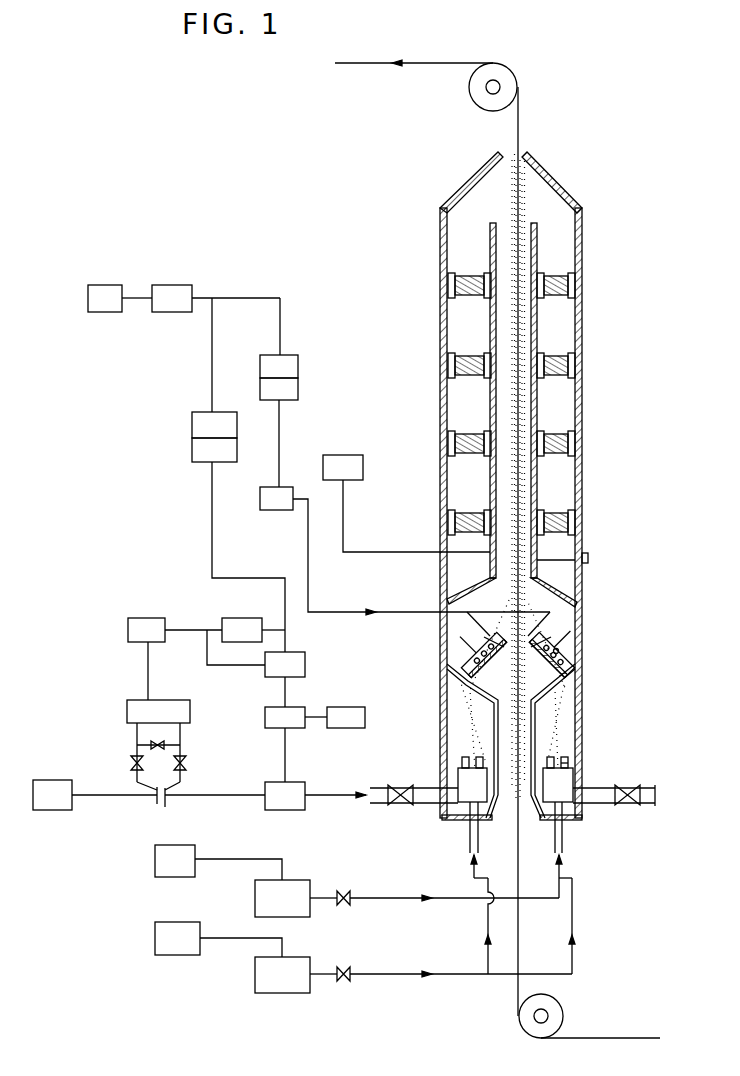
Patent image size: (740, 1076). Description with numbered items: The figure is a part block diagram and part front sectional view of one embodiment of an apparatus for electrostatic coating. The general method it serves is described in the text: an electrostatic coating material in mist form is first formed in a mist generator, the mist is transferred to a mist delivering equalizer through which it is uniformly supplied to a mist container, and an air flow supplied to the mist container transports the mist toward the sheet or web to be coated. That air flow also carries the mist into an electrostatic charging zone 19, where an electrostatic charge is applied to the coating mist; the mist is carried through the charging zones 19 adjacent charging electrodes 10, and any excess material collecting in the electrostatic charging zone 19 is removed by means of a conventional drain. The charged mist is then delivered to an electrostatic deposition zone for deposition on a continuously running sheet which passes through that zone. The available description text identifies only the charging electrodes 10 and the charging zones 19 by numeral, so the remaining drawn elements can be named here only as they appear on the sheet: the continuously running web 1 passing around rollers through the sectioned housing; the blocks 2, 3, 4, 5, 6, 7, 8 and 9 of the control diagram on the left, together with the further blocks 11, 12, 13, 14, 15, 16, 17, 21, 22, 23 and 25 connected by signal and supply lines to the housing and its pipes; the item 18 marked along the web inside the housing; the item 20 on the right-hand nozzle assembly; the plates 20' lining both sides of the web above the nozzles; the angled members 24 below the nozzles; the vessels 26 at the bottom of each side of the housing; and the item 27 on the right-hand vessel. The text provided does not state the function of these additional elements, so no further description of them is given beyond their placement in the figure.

The web 1 is at (519, 122).
The web speed sensor 2 is at (120, 298).
The speed signal converter 3 is at (216, 348).
The computing unit 4 is at (214, 425).
The regulator 5 is at (238, 545).
The signal transmitter 6 is at (279, 366).
The signal comparator 7 is at (279, 432).
The control unit 8 is at (285, 679).
The heater control 9 is at (363, 551).
The charging electrode 10 is at (476, 652).
The flow controller 11 is at (296, 744).
The setpoint unit 12 is at (175, 659).
The indicator 13 is at (346, 717).
The metering device 14 is at (315, 796).
The coating material supply 15 is at (149, 795).
The orifice 16 is at (175, 805).
The valve control 17 is at (158, 745).
The coating layer 18 is at (522, 403).
The electrostatic charging zone 19 is at (486, 638).
The nozzle orifice 20 is at (584, 660).
The inner guide plate 20' is at (510, 415).
The control unit 21 is at (246, 641).
The temperature control 22 is at (406, 503).
The gas supply unit 23 is at (413, 936).
The deflector plate 24 is at (447, 665).
The gas source 25 is at (218, 901).
The collecting vessel 26 is at (468, 760).
The collector nozzle 27 is at (568, 763).